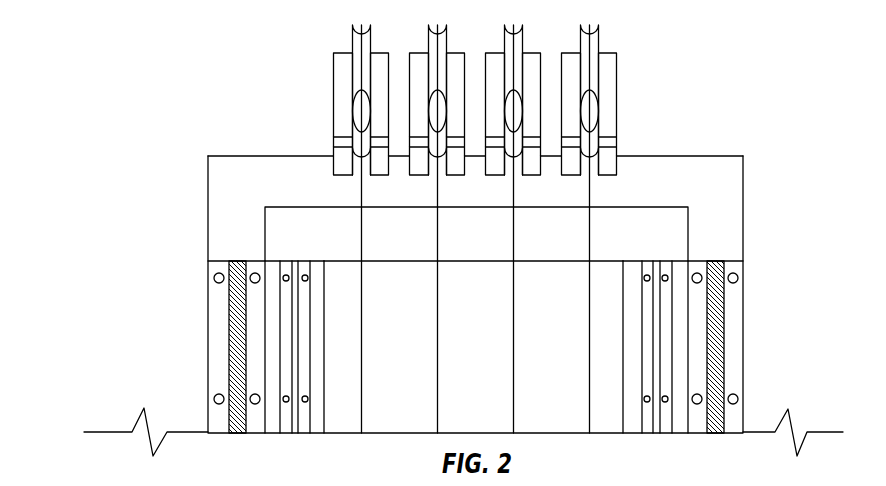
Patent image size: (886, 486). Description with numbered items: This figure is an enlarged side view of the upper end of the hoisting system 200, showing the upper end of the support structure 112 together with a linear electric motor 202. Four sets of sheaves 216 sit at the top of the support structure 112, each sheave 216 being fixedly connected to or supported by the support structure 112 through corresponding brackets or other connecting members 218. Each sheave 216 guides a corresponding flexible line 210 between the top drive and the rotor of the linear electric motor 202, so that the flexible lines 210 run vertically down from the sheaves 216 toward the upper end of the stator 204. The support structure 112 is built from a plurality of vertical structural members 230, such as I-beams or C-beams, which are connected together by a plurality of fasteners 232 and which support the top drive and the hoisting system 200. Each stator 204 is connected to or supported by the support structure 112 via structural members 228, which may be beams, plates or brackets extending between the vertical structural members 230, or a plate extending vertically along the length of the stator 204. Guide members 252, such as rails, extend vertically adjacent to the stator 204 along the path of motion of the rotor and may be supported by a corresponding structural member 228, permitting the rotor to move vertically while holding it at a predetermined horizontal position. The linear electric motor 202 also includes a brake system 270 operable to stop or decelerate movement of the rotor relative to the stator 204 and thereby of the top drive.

The hoisting system 200 is at (86, 51).
The support structure 112 is at (203, 204).
The linear electric motor 202 is at (339, 254).
The stator 204 is at (563, 260).
The flexible line 210 is at (512, 238).
The sheave 216 is at (350, 43).
The connecting member 218 is at (332, 92).
The structural member 228 is at (643, 260).
The vertical structural member 230 is at (208, 368).
The fastener 232 is at (213, 398).
The guide member 252 is at (290, 352).
The brake system 270 is at (175, 279).